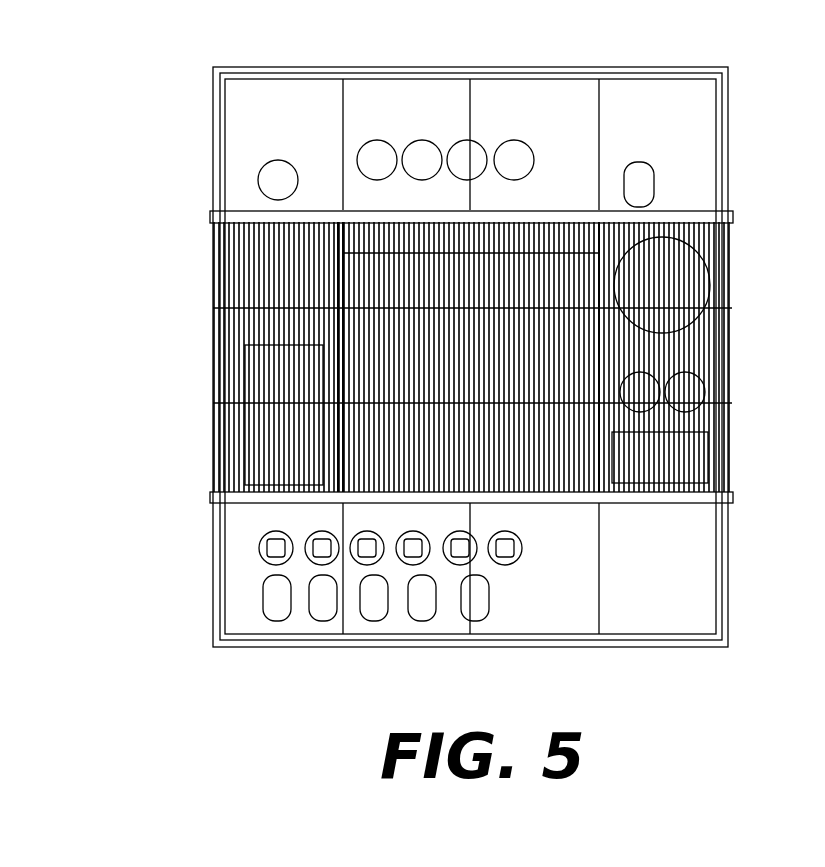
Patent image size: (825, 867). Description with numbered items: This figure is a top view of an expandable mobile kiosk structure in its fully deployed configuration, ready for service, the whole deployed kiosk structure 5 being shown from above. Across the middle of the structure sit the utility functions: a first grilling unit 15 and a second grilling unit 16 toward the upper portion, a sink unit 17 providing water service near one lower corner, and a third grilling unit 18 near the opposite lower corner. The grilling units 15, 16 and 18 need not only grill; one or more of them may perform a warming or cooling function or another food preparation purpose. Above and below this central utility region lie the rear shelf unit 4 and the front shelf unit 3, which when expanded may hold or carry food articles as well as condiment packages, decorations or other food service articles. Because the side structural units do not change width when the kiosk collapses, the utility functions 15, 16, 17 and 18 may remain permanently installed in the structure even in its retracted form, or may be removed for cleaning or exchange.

The front shelf unit 3 is at (630, 618).
The rear shelf unit 4 is at (562, 100).
The perforated panel 5 is at (438, 232).
The first grilling unit 15 is at (684, 262).
The second grilling unit 16 is at (227, 241).
The sink unit 17 is at (698, 459).
The third grilling unit 18 is at (237, 430).